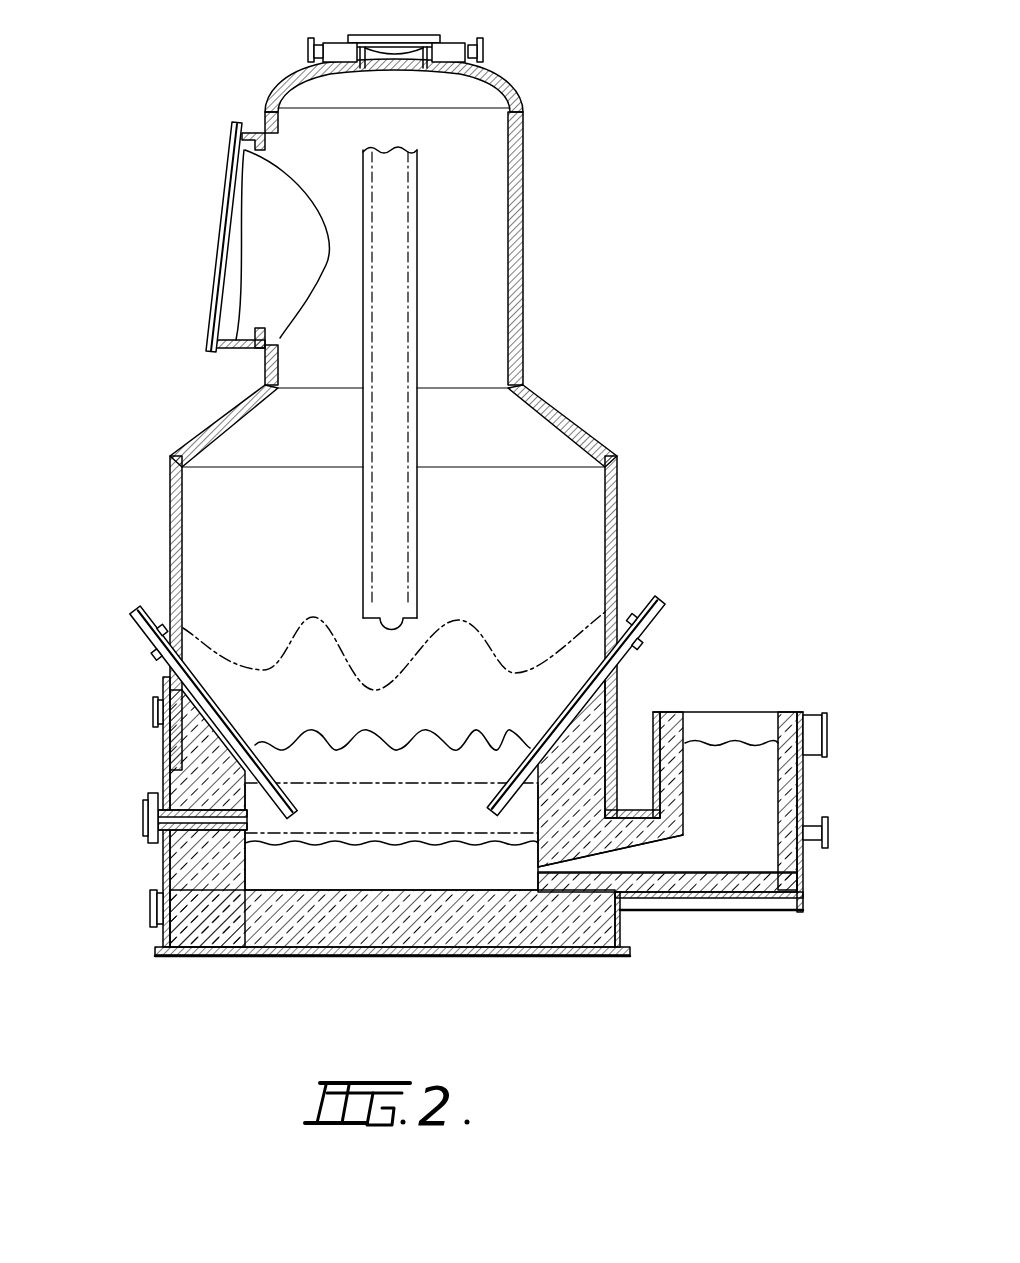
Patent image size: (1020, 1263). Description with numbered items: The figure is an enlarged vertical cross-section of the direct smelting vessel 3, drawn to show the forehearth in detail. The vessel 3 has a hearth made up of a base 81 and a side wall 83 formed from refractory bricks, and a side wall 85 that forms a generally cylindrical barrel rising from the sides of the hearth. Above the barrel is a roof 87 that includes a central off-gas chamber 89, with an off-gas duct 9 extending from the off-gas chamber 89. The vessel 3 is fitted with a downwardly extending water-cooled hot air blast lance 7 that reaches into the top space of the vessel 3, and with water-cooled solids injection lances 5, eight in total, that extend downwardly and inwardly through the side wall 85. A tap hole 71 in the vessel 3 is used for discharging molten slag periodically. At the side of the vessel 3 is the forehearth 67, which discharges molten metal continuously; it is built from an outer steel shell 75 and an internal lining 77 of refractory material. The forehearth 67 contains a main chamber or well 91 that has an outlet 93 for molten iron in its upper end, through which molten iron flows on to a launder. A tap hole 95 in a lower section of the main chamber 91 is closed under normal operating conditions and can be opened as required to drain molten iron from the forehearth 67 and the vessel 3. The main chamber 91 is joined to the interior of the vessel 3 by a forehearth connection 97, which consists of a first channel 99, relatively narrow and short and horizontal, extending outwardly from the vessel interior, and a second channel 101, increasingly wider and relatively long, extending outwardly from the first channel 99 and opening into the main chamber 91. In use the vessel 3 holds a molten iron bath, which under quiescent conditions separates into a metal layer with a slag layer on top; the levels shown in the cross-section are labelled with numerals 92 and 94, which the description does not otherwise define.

The direct smelting vessel 3 is at (414, 426).
The solids injection lances 5 is at (131, 607).
The hot air blast lance 7 is at (402, 552).
The off-gas duct 9 is at (228, 235).
The forehearth 67 is at (760, 767).
The tap hole 71 is at (150, 702).
The outer steel shell 75 is at (805, 787).
The internal lining 77 is at (790, 723).
The base 81 is at (305, 973).
The side wall of the hearth 83 is at (147, 882).
The side wall 85 is at (165, 485).
The roof 87 is at (197, 435).
The off-gas chamber 89 is at (493, 200).
The main chamber 91 is at (748, 855).
The metal layer 92 is at (377, 882).
The outlet 93 is at (818, 730).
The slag layer 94 is at (377, 822).
The tap hole 95 is at (818, 838).
The forehearth connection 97 is at (616, 870).
The first channel 99 is at (545, 870).
The second channel 101 is at (650, 855).